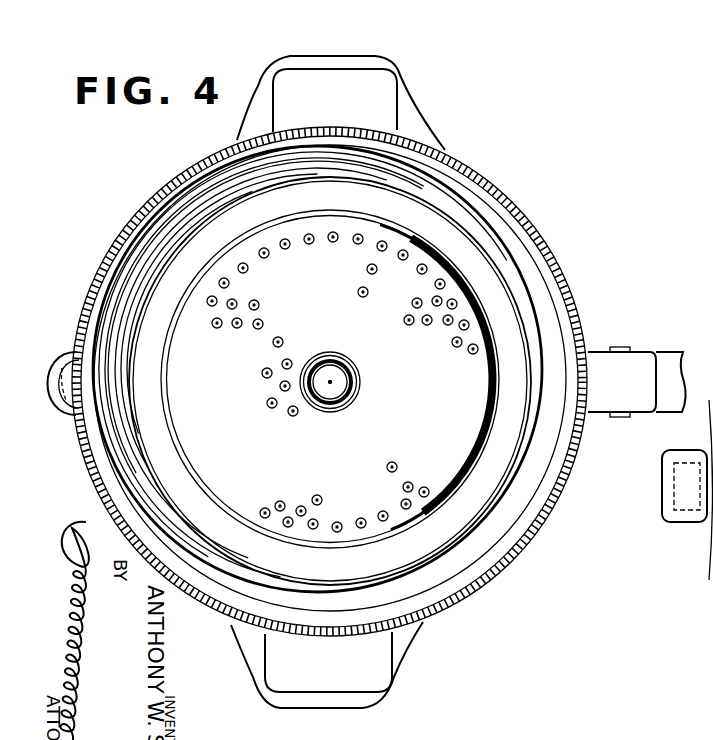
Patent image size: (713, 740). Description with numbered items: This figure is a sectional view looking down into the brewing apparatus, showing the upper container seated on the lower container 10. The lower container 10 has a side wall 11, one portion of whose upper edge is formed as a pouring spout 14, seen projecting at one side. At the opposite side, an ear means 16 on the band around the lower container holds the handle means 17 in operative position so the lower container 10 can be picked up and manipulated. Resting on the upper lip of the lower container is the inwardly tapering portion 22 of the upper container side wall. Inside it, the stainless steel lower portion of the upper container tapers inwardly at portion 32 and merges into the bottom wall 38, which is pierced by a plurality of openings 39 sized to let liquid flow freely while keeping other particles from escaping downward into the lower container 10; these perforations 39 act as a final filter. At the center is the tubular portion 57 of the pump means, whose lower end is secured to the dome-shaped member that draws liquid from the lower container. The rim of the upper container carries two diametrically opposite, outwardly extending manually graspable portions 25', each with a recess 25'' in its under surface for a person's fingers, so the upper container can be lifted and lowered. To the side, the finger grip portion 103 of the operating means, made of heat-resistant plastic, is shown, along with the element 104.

The lower container 10 is at (529, 545).
The side wall 11 is at (547, 237).
The pouring spout 14 is at (63, 372).
The ear means 16 is at (590, 416).
The handle means 17 is at (668, 352).
The inwardly tapering portion 22 is at (533, 277).
The manually graspable portions 25' is at (360, 382).
The recesses 25'' is at (379, 404).
The inwardly tapering portion of lower portion 32 is at (517, 312).
The bottom wall 38 is at (490, 380).
The openings 39 is at (309, 239).
The tubular portion 57 is at (352, 389).
The finger grip portion 103 is at (667, 522).
The slot 104 is at (684, 462).